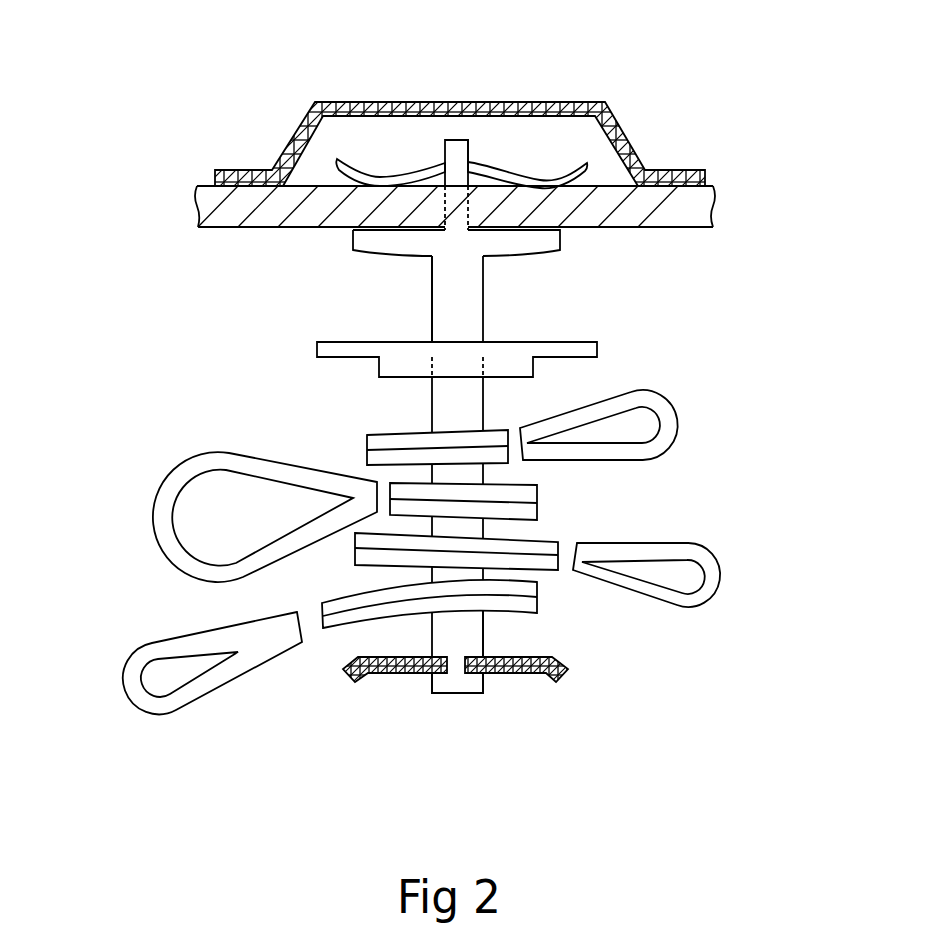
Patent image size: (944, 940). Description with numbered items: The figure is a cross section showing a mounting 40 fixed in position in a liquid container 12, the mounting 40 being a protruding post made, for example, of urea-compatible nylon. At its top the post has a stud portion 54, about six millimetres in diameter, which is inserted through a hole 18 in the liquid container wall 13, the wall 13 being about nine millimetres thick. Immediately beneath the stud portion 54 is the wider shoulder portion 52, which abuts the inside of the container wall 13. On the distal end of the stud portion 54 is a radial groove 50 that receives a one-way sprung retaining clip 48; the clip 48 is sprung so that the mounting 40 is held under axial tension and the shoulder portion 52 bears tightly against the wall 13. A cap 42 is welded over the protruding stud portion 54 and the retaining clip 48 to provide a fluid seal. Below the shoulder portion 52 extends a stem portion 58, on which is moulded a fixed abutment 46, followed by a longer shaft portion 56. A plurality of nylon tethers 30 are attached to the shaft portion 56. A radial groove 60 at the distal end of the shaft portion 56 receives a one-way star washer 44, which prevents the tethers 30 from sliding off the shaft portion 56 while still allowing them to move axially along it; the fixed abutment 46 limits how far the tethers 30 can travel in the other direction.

The liquid container 12 is at (452, 252).
The liquid container wall 13 is at (223, 218).
The hole 18 is at (476, 206).
The nylon tethers 30 is at (148, 705).
The mounting 40 is at (533, 527).
The cap 42 is at (563, 107).
The star washer 44 is at (520, 670).
The fixed abutment 46 is at (580, 350).
The retaining clip 48 is at (410, 165).
The radial groove 50 is at (584, 99).
The shoulder portion 52 is at (378, 240).
The stud portion 54 is at (470, 153).
The shaft portion 56 is at (487, 629).
The stem portion 58 is at (432, 320).
The radial groove 60 is at (442, 674).